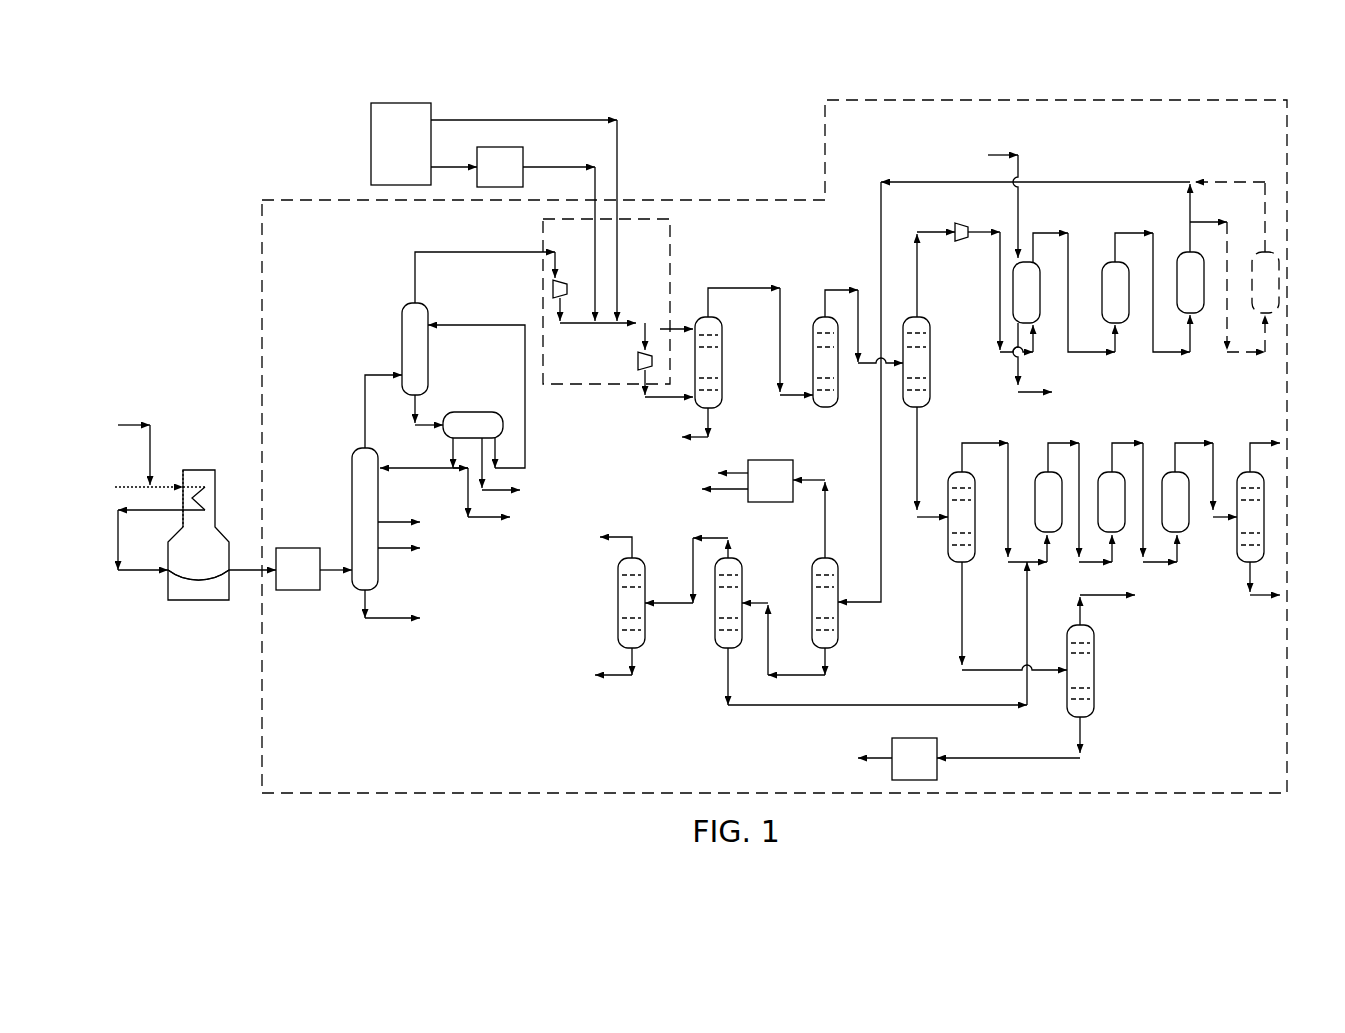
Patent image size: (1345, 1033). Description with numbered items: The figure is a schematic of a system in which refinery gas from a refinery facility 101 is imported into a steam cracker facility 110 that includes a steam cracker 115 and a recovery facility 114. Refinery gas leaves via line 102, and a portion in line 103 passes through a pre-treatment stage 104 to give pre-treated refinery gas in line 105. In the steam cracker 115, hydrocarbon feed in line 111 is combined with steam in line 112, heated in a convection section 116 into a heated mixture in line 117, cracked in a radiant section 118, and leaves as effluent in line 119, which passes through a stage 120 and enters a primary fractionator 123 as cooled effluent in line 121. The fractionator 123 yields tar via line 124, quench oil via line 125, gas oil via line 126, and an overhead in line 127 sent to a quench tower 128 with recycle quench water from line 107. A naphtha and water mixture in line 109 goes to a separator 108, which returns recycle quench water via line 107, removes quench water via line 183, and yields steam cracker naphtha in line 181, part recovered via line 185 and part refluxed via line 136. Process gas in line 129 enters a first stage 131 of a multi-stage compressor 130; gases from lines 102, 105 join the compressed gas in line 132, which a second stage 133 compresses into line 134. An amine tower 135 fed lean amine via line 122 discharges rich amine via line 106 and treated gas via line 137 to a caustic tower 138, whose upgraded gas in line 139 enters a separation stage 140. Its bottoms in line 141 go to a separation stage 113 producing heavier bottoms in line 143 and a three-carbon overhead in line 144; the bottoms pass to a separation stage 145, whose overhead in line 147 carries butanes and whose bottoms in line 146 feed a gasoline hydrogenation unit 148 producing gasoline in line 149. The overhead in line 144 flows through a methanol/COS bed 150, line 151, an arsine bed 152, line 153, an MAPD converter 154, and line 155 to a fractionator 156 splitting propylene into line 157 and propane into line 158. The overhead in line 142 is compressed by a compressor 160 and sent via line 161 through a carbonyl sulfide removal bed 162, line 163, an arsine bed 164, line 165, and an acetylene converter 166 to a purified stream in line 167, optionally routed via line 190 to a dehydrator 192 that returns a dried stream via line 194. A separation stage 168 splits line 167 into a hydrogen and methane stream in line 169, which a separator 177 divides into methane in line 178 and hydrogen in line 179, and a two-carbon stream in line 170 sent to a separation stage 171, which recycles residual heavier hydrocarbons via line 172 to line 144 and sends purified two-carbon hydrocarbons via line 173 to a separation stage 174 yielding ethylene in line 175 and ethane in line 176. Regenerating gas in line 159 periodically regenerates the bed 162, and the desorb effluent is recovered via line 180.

The refinery facility 101 is at (401, 144).
The refinery gas line 102 is at (492, 118).
The refinery gas portion line 103 is at (455, 164).
The pre-treatment stage 104 is at (500, 167).
The pre-treated refinery gas line 105 is at (553, 164).
The rich amine solution line 106 is at (712, 418).
The recycle quench water line 107 is at (525, 348).
The separator 108 is at (486, 410).
The naphtha and quench water mixture line 109 is at (420, 402).
The steam cracker facility 110 is at (232, 750).
The hydrocarbon feed line 111 is at (122, 483).
The water and/or steam line 112 is at (133, 420).
The separation stage 113 is at (955, 470).
The recovery facility 114 is at (355, 791).
The steam cracker 115 is at (200, 468).
The convection section 116 is at (229, 487).
The heated mixture line 117 is at (118, 528).
The radiant section 118 is at (205, 614).
The steam cracker effluent line 119 is at (246, 568).
The separation unit 120 is at (298, 569).
The cooled steam cracker effluent line 121 is at (332, 565).
The lean amine solution line 122 is at (677, 327).
The primary fractionator 123 is at (352, 494).
The tar product line 124 is at (395, 616).
The steam cracker quench oil line 125 is at (404, 546).
The steam cracker gas oil line 126 is at (400, 518).
The overhead product line 127 is at (365, 412).
The quench tower 128 is at (402, 324).
The process gas line 129 is at (415, 279).
The multi-stage compressor 130 is at (543, 226).
The first compression stage 131 is at (553, 290).
The combined gas line 132 is at (578, 332).
The second compression stage 133 is at (638, 362).
The compressed combined gas line 134 is at (675, 404).
The amine tower 135 is at (722, 364).
The naphtha reflux line 136 is at (438, 472).
The treated combined gas line 137 is at (742, 285).
The caustic tower 138 is at (818, 315).
The upgraded combined gas line 139 is at (842, 287).
The separation stage 140 is at (930, 353).
The bottoms stream line 141 is at (922, 520).
The overhead stream line 142 is at (917, 296).
The bottoms stream line 143 is at (962, 618).
The overhead stream line 144 is at (985, 441).
The separation stage 145 is at (1094, 670).
The bottoms stream line 146 is at (1081, 731).
The overhead stream line 147 is at (1112, 598).
The gasoline hydrogenation unit 148 is at (914, 759).
The gasoline product line 149 is at (877, 755).
The methanol/COS bed 150 is at (1040, 470).
The line 151 is at (1063, 441).
The arsine bed 152 is at (1105, 470).
The line 153 is at (1128, 441).
The methyl acetylene and propadiene converter 154 is at (1170, 470).
The line 155 is at (1195, 441).
The C3 separation stage 156 is at (1240, 470).
The propylene line 157 is at (1262, 440).
The propane line 158 is at (1268, 598).
The regenerating gas line 159 is at (1000, 150).
The compressor 160 is at (962, 241).
The compressed stream line 161 is at (1000, 324).
The mercaptan and carbonyl sulfide removal bed 162 is at (1036, 325).
The line 163 is at (1048, 230).
The arsine bed 164 is at (1125, 325).
The line 165 is at (1130, 230).
The C2 acetylene converter 166 is at (1177, 282).
The purified stream line 167 is at (915, 179).
The separation stage 168 is at (838, 636).
The first stream line 169 is at (825, 513).
The second stream line 170 is at (790, 671).
The separation stage 171 is at (742, 569).
The recycle line 172 is at (728, 682).
The purified C2 hydrocarbon line 173 is at (693, 549).
The separation stage 174 is at (618, 603).
The ethylene line 175 is at (618, 534).
The ethane line 176 is at (614, 680).
The separator 177 is at (770, 481).
The methane line 178 is at (731, 470).
The molecular hydrogen line 179 is at (721, 493).
The desorb effluent line 180 is at (1018, 377).
The steam cracker naphtha line 181 is at (453, 448).
The quench water line 183 is at (502, 489).
The steam cracker naphtha product line 185 is at (487, 516).
The line to dehydrator 190 is at (1227, 356).
The dehydrator 192 is at (1279, 284).
The dried stream line 194 is at (1278, 230).